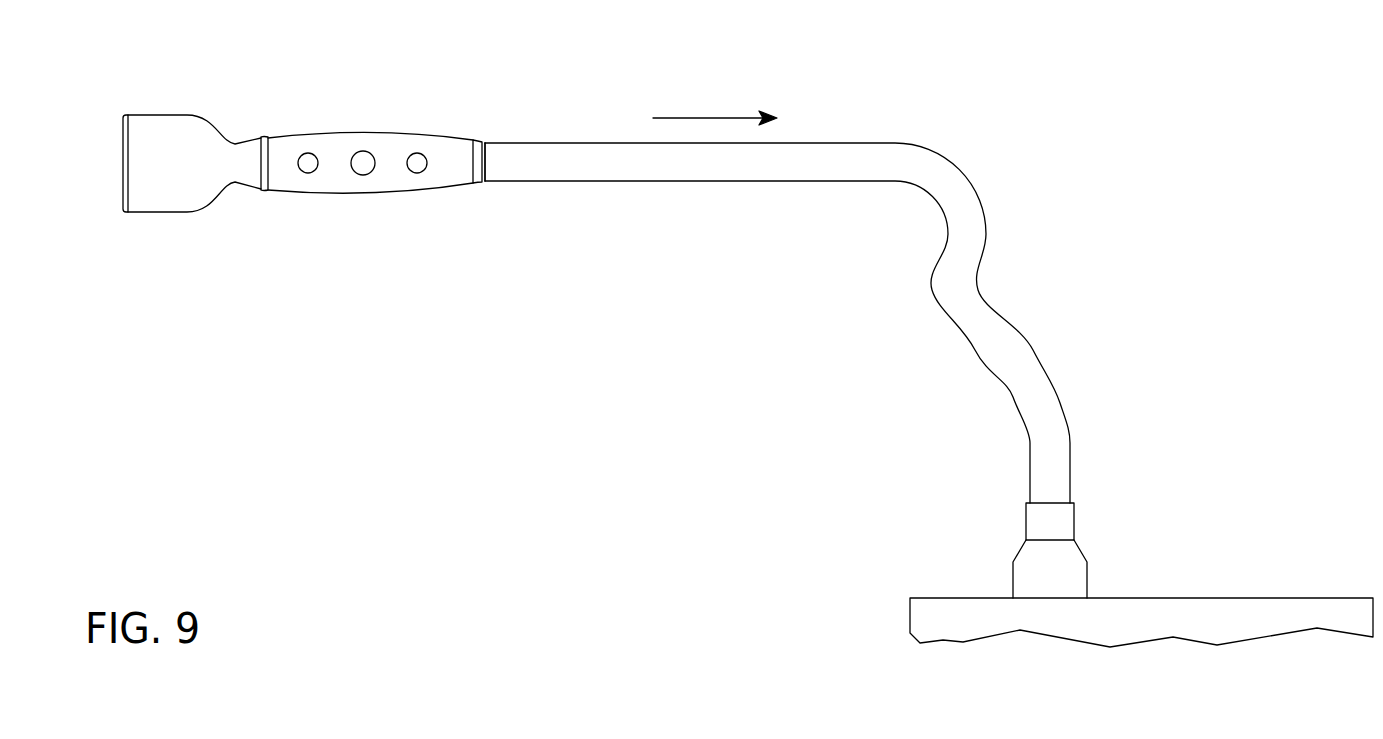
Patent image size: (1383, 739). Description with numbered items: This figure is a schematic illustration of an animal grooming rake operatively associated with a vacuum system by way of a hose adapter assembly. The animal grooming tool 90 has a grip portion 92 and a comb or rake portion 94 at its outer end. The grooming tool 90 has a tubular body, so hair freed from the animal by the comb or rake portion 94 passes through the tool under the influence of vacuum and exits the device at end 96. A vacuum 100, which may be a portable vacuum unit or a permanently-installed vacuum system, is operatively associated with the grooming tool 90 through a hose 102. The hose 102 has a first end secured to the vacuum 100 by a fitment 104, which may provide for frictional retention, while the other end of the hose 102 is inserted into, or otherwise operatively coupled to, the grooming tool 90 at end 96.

The animal grooming tool 90 is at (315, 94).
The grip portion 92 is at (437, 142).
The comb or rake portion 94 is at (123, 167).
The end 96 is at (483, 165).
The vacuum 100 is at (1277, 598).
The hose 102 is at (1060, 405).
The fitment 104 is at (1078, 577).